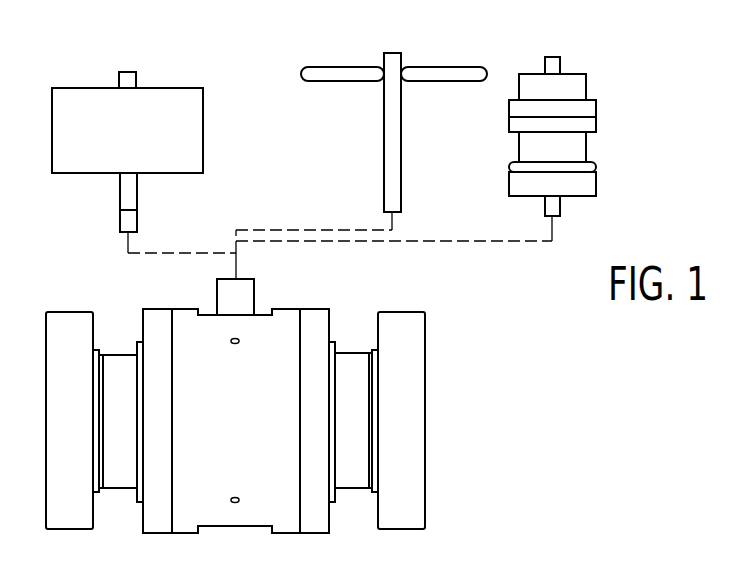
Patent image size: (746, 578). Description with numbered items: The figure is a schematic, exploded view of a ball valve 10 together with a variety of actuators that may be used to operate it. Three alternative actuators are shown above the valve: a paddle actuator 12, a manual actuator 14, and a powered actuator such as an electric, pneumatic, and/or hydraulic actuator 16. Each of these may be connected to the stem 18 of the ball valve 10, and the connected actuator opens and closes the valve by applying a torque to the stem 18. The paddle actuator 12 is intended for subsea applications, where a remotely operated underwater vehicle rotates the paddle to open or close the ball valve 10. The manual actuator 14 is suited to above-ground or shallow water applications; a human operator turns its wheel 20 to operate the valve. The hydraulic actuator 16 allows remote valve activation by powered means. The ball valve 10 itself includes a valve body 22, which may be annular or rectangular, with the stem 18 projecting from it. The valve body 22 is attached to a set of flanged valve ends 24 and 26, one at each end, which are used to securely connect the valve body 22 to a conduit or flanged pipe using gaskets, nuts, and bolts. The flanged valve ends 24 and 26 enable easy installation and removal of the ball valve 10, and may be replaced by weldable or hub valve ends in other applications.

The ball valve 10 is at (284, 421).
The paddle actuator 12 is at (168, 88).
The manual actuator 14 is at (392, 52).
The hydraulic actuator 16 is at (575, 74).
The stem 18 is at (217, 293).
The wheel 20 is at (440, 66).
The valve body 22 is at (285, 308).
The flanged valve end 24 is at (70, 530).
The flanged valve end 26 is at (402, 530).